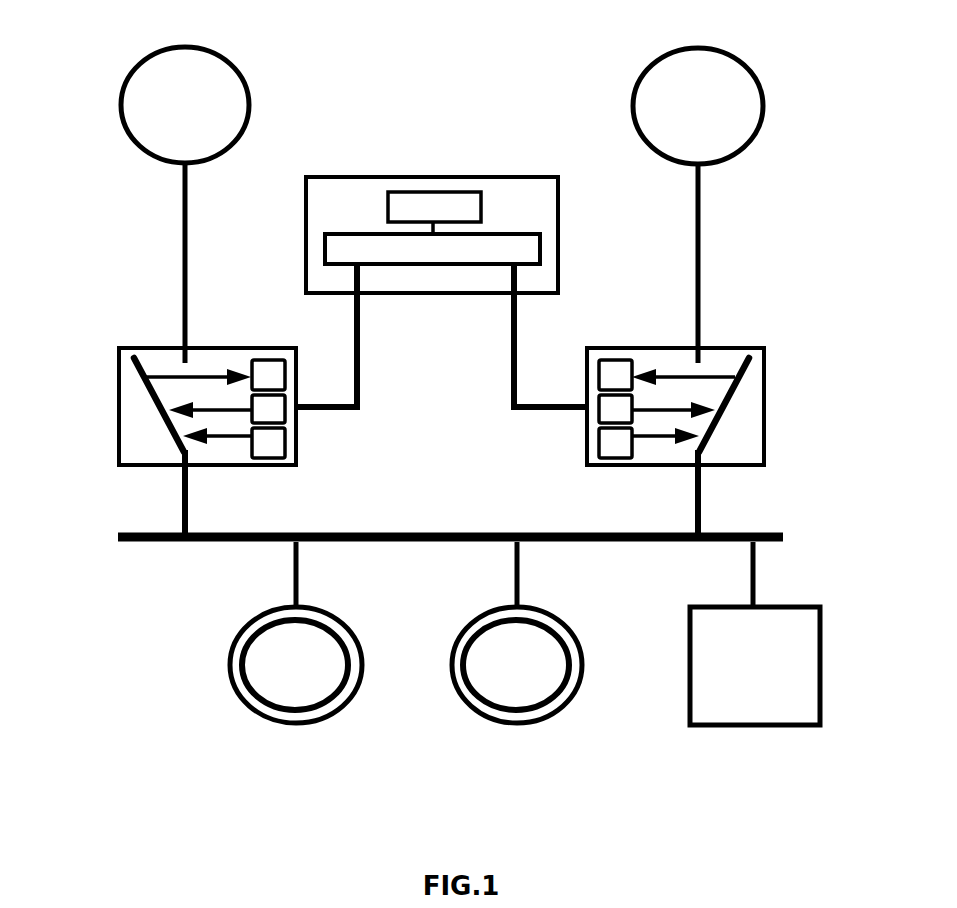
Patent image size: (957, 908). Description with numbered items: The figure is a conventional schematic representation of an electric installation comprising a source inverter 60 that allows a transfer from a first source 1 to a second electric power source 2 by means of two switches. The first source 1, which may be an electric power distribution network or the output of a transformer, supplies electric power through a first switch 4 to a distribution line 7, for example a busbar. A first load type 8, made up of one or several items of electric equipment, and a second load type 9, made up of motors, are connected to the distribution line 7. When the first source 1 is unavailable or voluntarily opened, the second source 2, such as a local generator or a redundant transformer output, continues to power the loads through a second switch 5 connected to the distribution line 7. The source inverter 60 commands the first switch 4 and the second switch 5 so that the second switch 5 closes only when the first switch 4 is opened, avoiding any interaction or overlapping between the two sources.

The first source 1 is at (178, 62).
The second electric power source 2 is at (697, 68).
The source inverter 60 is at (360, 192).
The first switch 4 is at (138, 414).
The second switch 5 is at (747, 404).
The distribution line 7 is at (743, 532).
The first load type 8 is at (800, 671).
The second load type 9 is at (505, 693).